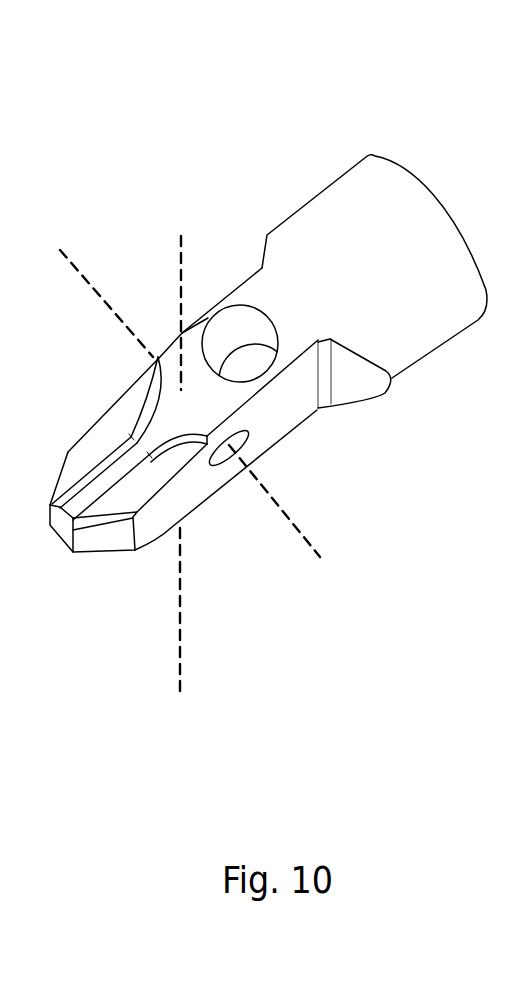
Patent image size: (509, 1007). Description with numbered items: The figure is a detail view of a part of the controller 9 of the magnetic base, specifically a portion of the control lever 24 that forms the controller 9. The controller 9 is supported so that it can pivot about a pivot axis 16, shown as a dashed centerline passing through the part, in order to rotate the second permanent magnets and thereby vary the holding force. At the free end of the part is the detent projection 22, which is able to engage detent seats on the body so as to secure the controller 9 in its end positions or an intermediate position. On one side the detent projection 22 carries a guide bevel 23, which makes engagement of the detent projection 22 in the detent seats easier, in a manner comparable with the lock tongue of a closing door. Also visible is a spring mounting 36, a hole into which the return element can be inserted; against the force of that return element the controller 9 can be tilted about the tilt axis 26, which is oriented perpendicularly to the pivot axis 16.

The controller 9 is at (268, 305).
The control lever 24 is at (306, 267).
The pivot axis 16 is at (181, 234).
The guide bevel 23 is at (85, 476).
The detent projection 22 is at (78, 495).
The tilt axis 26 is at (320, 557).
The spring mounting 36 is at (267, 362).